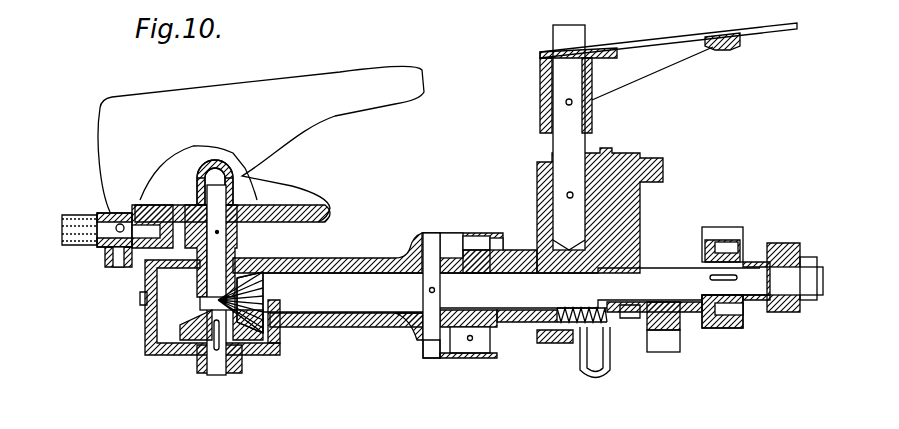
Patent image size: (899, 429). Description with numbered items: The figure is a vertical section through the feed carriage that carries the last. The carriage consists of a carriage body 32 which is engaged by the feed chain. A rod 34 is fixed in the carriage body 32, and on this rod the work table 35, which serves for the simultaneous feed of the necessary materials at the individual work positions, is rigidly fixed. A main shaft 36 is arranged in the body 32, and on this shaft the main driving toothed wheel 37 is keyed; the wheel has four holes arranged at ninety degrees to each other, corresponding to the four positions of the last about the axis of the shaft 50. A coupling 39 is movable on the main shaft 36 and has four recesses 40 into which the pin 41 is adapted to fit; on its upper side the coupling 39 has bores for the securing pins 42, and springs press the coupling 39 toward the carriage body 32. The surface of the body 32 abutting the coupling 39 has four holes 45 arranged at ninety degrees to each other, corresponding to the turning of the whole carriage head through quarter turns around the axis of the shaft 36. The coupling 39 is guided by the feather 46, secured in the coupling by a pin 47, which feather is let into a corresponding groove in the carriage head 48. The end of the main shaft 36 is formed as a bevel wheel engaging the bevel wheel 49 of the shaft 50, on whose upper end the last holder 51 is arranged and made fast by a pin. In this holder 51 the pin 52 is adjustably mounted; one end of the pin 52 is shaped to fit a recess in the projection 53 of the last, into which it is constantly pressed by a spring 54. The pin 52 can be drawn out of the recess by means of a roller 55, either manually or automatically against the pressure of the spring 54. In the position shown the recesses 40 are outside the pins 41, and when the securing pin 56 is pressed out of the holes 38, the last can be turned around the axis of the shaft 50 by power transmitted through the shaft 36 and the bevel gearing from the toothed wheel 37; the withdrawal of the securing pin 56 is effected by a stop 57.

The carriage body 32 is at (622, 160).
The rod 34 is at (552, 146).
The work table 35 is at (635, 72).
The main shaft 36 is at (637, 287).
The main driving toothed wheel 37 is at (712, 226).
The holes 38 is at (712, 330).
The coupling 39 is at (452, 250).
The recesses 40 is at (432, 240).
The pin 41 is at (430, 294).
The securing pins 42 is at (478, 252).
The holes 45 is at (502, 246).
The feather 46 is at (497, 357).
The pin 47 is at (468, 342).
The carriage head 48 is at (428, 345).
The bevel wheel 49 is at (240, 330).
The shaft 50 is at (217, 366).
The last holder 51 is at (320, 222).
The pin 52 is at (146, 203).
The projection 53 is at (178, 210).
The spring 54 is at (90, 248).
The roller 55 is at (110, 267).
The securing pin 56 is at (637, 318).
The stop 57 is at (662, 350).